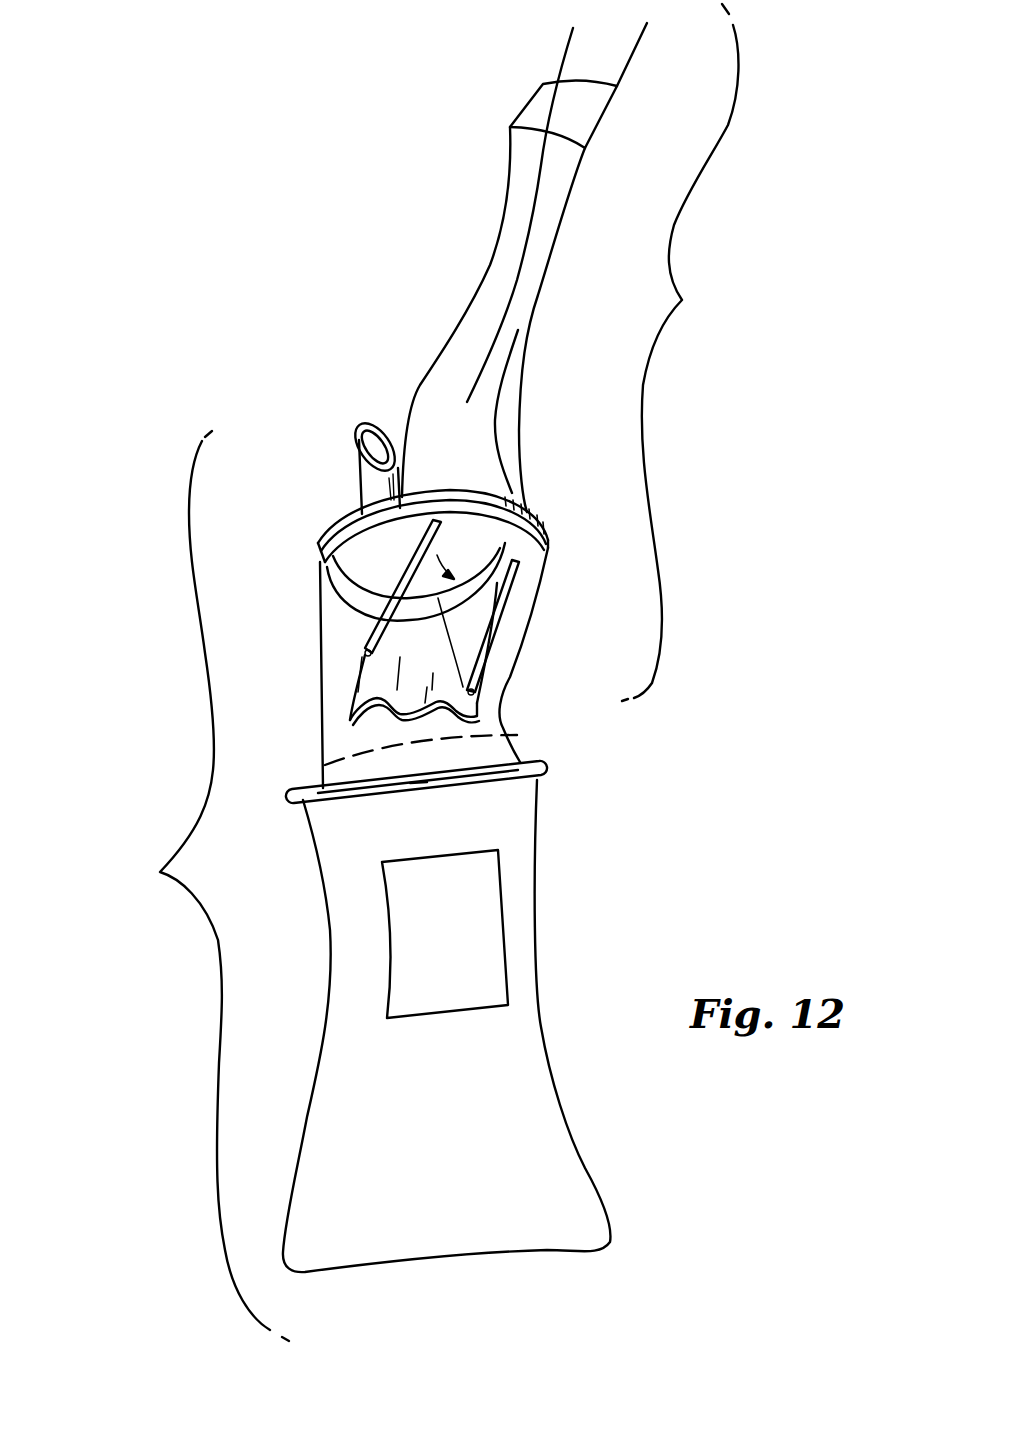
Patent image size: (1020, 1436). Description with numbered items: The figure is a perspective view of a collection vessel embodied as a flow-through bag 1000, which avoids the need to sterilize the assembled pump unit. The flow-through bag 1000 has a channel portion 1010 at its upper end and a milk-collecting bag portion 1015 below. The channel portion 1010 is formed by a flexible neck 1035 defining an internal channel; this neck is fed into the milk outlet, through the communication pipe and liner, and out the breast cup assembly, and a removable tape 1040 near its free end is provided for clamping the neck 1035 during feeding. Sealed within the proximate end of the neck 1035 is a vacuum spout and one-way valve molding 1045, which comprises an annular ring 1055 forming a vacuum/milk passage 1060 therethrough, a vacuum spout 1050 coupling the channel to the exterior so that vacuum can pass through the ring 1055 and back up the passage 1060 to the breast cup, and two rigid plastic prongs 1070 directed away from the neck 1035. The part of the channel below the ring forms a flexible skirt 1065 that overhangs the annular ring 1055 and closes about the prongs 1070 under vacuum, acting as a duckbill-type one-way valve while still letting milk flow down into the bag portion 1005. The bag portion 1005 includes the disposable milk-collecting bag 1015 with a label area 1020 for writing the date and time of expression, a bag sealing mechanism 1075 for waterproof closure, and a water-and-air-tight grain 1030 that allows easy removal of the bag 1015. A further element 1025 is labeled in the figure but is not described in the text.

The flow-through bag 1000 is at (780, 297).
The bag portion 1005 is at (189, 886).
The channel portion 1010 is at (681, 352).
The milk-collecting bag 1015 is at (537, 895).
The label area 1020 is at (428, 1016).
The intermediate housing 1025 is at (503, 713).
The water-and-air-tight grain 1030 is at (324, 765).
The flexible neck 1035 is at (478, 288).
The removable tape 1040 is at (530, 102).
The vacuum spout and one-way valve molding 1045 is at (330, 507).
The vacuum spout 1050 is at (360, 457).
The annular ring 1055 is at (317, 553).
The vacuum/milk passage 1060 is at (505, 587).
The flexible skirt 1065 is at (490, 705).
The rigid plastic prongs 1070 is at (373, 572).
The bag sealing mechanism 1075 is at (548, 771).